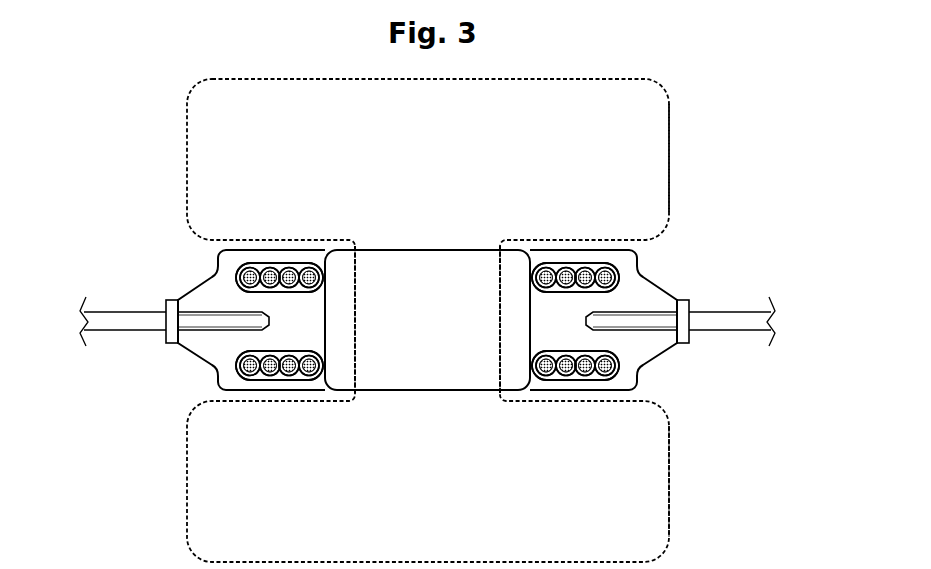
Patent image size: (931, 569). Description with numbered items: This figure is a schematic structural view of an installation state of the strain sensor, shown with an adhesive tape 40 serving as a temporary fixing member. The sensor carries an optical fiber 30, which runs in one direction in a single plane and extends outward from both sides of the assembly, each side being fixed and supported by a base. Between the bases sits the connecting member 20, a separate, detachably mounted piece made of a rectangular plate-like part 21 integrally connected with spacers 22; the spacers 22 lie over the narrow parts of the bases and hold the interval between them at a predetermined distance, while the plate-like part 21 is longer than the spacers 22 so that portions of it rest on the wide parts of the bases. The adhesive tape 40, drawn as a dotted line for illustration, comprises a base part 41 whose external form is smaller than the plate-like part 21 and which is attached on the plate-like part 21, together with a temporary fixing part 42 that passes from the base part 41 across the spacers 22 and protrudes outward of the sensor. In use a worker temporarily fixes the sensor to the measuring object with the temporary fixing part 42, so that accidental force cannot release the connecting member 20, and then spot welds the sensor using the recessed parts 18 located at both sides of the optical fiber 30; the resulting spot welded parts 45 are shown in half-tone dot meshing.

The recessed part 18 is at (277, 268).
The connecting member 20 is at (436, 241).
The plate-like part 21 is at (515, 356).
The spacer 22 is at (487, 250).
The optical fiber 30 is at (136, 312).
The adhesive tape 40 is at (247, 71).
The base part 41 is at (358, 308).
The temporary fixing part 42 is at (669, 153).
The spot welded part 45 is at (237, 275).